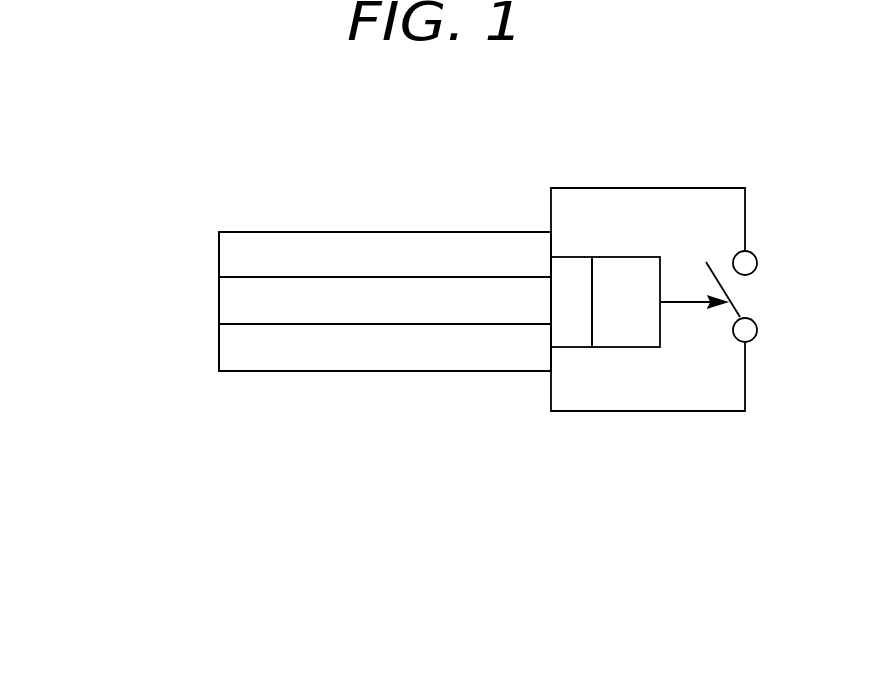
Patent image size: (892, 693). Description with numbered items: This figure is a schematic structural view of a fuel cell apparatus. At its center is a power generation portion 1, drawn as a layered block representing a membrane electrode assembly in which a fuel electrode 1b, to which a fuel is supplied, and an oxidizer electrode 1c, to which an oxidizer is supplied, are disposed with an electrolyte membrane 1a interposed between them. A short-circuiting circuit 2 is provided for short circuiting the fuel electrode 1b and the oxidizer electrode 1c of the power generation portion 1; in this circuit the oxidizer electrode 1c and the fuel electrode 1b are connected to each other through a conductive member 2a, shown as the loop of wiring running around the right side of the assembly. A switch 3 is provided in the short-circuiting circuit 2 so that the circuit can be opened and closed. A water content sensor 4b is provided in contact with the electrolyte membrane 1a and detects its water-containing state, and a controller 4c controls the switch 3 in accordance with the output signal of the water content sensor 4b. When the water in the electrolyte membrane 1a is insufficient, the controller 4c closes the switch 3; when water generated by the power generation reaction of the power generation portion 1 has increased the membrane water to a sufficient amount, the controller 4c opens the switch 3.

The power generation portion 1 is at (197, 298).
The electrolyte membrane 1a is at (288, 300).
The fuel electrode 1b is at (372, 363).
The oxidizer electrode 1c is at (375, 243).
The short-circuiting circuit 2 is at (680, 152).
The conductive member 2a is at (603, 188).
The switch 3 is at (726, 290).
The water content sensor 4b is at (575, 348).
The controller 4c is at (628, 348).